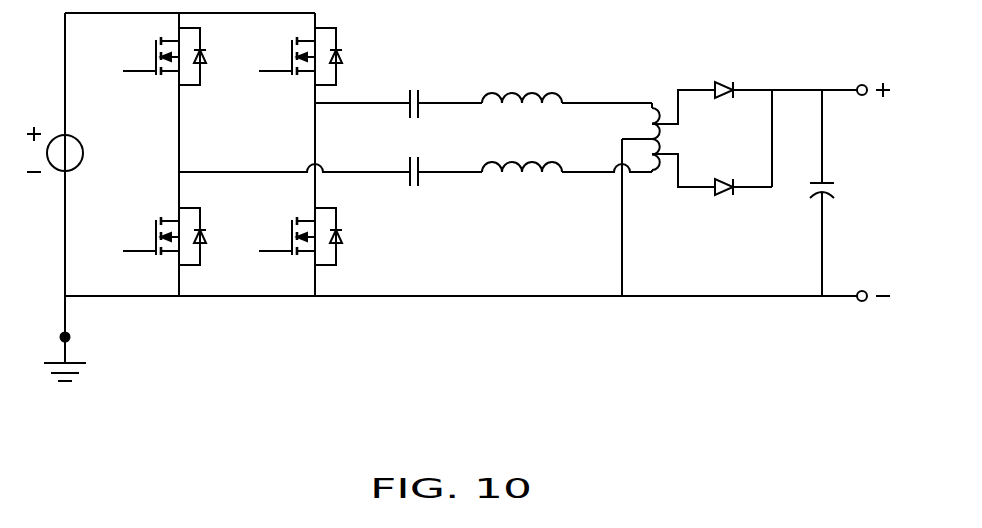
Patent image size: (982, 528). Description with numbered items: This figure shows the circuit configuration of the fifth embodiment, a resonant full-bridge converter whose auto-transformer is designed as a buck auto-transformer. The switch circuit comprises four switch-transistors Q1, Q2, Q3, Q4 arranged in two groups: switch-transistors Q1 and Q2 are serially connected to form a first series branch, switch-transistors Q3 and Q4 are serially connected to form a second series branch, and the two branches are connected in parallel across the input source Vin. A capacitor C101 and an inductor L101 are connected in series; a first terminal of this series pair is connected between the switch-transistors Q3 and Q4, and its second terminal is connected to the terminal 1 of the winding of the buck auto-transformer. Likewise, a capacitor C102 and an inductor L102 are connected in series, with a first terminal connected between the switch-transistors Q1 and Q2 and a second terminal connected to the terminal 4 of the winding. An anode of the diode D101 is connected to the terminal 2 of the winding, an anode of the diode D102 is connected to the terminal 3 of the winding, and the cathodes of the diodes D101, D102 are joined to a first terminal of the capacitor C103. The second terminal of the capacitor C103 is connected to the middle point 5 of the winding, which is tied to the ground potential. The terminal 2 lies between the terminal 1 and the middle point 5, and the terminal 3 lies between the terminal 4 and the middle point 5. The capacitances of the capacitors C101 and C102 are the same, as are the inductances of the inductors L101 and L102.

The terminal of the winding 1 is at (652, 108).
The terminal of the winding 2 is at (656, 124).
The terminal of the winding 3 is at (660, 154).
The terminal of the winding 4 is at (656, 171).
The middle point of the winding 5 is at (650, 139).
The switch-transistor Q1 is at (181, 56).
The switch-transistor Q2 is at (181, 236).
The switch-transistor Q3 is at (317, 56).
The switch-transistor Q4 is at (317, 236).
The capacitor C101 is at (425, 87).
The capacitor C102 is at (425, 190).
The inductor L101 is at (522, 80).
The inductor L102 is at (522, 187).
The diode D101 is at (779, 70).
The diode D102 is at (737, 206).
The capacitor C103 is at (853, 193).
The input voltage source Vin is at (73, 149).